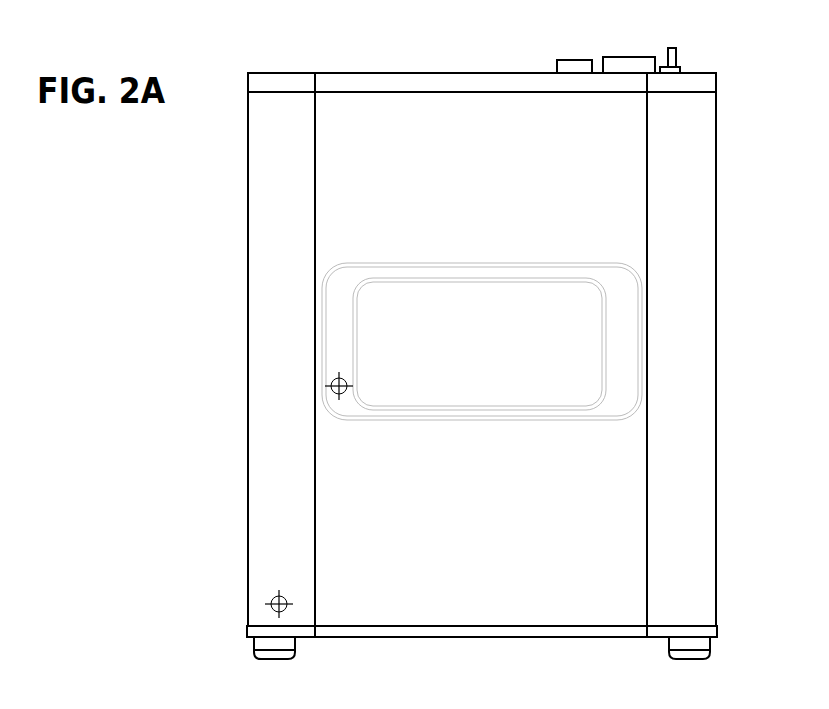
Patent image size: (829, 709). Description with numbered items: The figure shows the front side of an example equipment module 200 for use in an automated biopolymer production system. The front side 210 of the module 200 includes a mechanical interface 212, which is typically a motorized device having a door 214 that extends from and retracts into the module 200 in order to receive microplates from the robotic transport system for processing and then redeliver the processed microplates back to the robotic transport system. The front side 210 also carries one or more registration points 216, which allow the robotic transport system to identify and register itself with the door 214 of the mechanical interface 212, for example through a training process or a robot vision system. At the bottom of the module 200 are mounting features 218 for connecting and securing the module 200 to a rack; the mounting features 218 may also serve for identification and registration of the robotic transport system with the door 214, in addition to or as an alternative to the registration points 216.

The module 200 is at (170, 228).
The front side 210 is at (284, 176).
The mechanical interface 212 is at (332, 318).
The door 214 is at (380, 348).
The registration point 216 is at (278, 595).
The mounting feature 218 is at (253, 647).